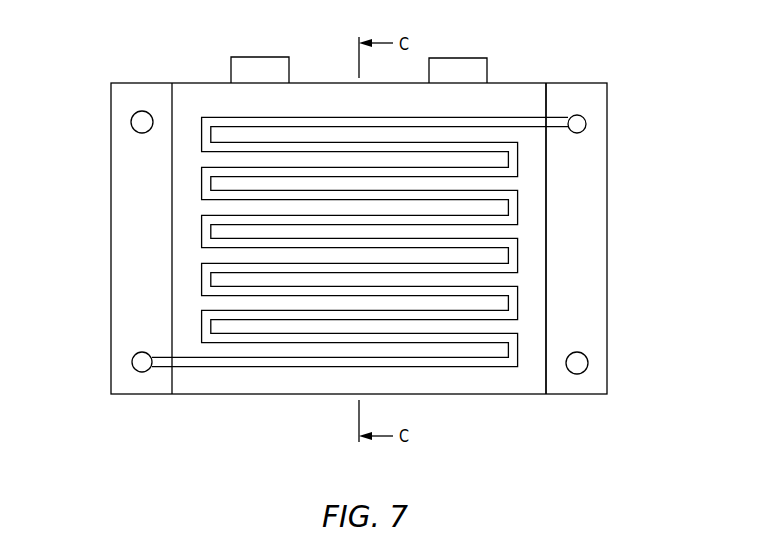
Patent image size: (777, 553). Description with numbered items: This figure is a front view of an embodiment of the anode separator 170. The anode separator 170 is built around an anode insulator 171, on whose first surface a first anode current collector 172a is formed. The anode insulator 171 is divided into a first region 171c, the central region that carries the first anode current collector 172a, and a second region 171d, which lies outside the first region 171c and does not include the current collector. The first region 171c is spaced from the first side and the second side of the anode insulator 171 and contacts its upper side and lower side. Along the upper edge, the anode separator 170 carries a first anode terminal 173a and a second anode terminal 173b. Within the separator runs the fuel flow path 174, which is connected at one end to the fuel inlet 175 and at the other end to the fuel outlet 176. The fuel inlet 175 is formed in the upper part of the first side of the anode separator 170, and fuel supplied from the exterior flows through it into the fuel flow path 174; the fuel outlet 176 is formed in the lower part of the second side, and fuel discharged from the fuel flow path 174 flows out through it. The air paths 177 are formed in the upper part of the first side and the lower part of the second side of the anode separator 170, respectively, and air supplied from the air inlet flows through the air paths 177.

The anode separator 170 is at (360, 228).
The anode insulator 171 is at (122, 310).
The first region 171c is at (173, 240).
The second region 171d is at (122, 169).
The first anode current collector 172a is at (542, 251).
The first anode terminal 173a is at (270, 62).
The second anode terminal 173b is at (458, 56).
The fuel flow path 174 is at (318, 116).
The fuel inlet 175 is at (586, 125).
The fuel outlet 176 is at (142, 372).
The air paths 177 is at (141, 111).